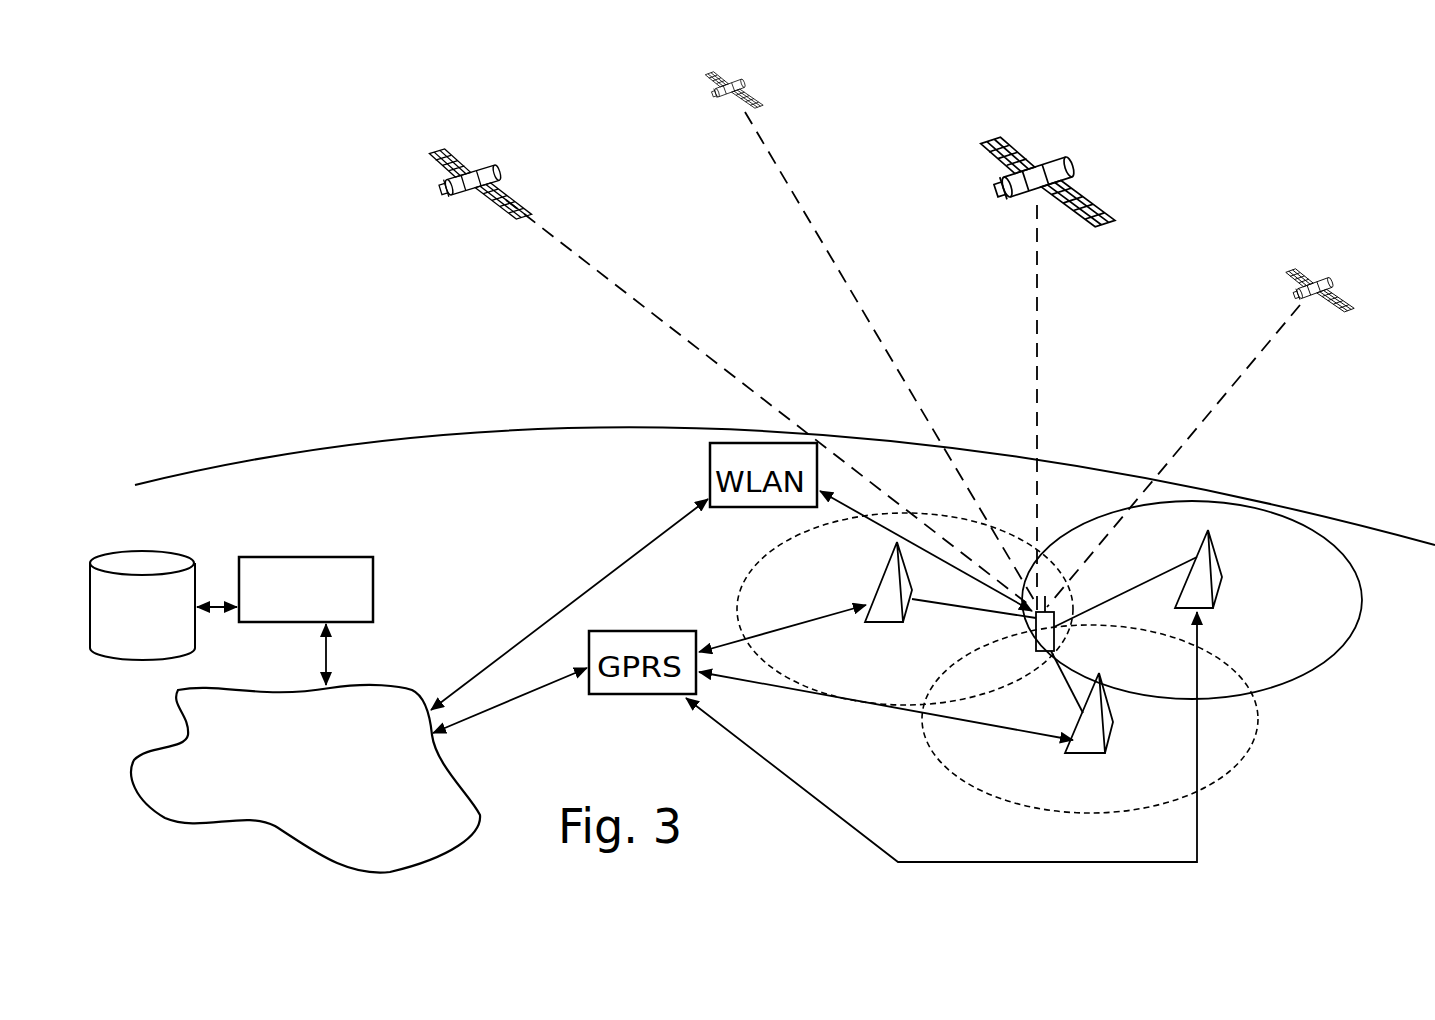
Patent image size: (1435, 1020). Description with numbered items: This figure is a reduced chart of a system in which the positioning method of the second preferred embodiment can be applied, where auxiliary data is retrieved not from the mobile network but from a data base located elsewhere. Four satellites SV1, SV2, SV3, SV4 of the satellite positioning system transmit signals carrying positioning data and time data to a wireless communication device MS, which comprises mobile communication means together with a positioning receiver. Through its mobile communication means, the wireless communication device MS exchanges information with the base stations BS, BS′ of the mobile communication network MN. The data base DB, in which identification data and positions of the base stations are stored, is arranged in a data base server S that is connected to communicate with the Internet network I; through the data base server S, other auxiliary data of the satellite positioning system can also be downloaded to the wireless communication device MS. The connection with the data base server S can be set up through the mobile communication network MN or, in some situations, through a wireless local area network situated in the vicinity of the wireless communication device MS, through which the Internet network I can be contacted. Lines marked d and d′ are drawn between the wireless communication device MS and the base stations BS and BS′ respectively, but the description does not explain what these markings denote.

The satellite SV1 is at (712, 358).
The satellite SV2 is at (866, 314).
The satellite SV3 is at (1048, 350).
The satellite SV4 is at (1204, 412).
The data base DB is at (172, 560).
The data base server S is at (373, 589).
The Internet network I is at (395, 687).
The wireless communication device MS is at (1054, 632).
The base station BS is at (1218, 565).
The base station BS′ is at (893, 603).
The distance between MS and BS d is at (1125, 586).
The distance between MS and BS′ d′ is at (974, 599).
The mobile communication network MN is at (1264, 814).